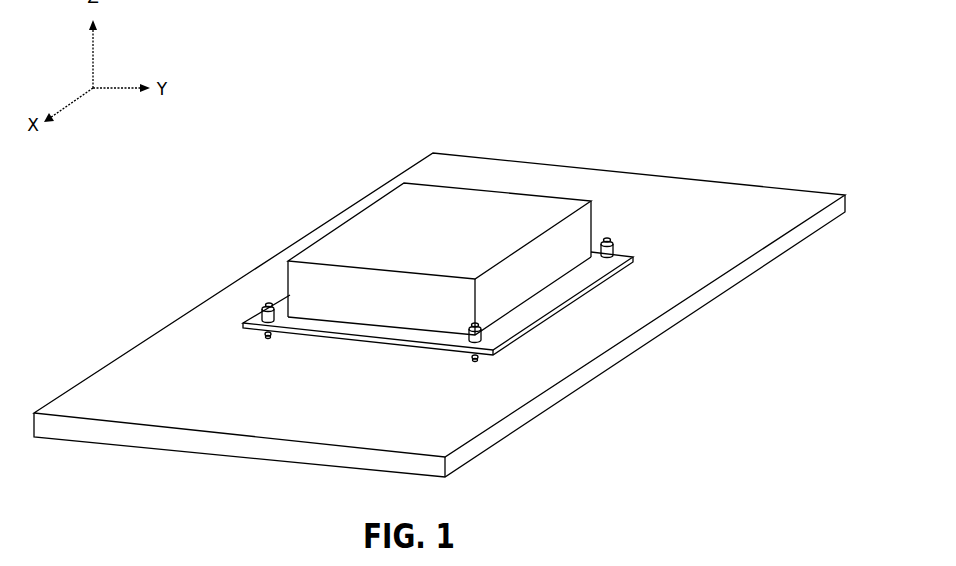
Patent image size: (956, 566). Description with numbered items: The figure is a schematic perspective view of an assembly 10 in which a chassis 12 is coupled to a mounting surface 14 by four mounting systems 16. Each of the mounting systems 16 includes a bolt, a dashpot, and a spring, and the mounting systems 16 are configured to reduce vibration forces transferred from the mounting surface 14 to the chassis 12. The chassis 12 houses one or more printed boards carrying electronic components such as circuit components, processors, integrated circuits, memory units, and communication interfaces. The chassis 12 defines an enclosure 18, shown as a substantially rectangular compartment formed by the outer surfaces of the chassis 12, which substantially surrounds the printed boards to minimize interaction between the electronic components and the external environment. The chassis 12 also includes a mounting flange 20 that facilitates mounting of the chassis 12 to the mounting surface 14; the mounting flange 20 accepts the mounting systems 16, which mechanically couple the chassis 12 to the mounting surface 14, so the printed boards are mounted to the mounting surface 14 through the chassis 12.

The assembly 10 is at (634, 103).
The chassis 12 is at (411, 220).
The mounting surface 14 is at (798, 197).
The mounting system 16 is at (613, 238).
The enclosure 18 is at (552, 207).
The mounting flange 20 is at (557, 297).